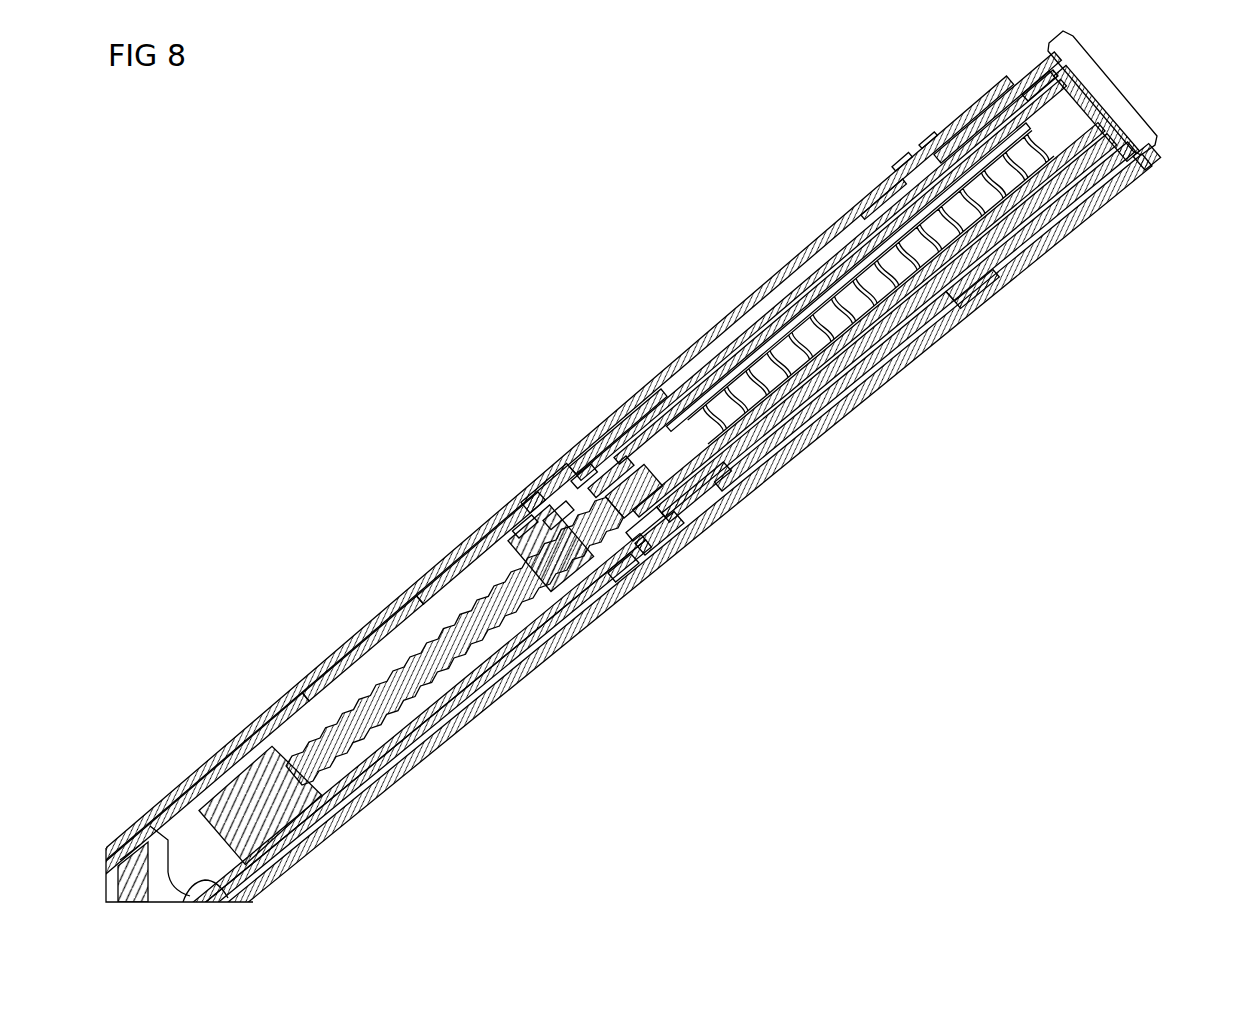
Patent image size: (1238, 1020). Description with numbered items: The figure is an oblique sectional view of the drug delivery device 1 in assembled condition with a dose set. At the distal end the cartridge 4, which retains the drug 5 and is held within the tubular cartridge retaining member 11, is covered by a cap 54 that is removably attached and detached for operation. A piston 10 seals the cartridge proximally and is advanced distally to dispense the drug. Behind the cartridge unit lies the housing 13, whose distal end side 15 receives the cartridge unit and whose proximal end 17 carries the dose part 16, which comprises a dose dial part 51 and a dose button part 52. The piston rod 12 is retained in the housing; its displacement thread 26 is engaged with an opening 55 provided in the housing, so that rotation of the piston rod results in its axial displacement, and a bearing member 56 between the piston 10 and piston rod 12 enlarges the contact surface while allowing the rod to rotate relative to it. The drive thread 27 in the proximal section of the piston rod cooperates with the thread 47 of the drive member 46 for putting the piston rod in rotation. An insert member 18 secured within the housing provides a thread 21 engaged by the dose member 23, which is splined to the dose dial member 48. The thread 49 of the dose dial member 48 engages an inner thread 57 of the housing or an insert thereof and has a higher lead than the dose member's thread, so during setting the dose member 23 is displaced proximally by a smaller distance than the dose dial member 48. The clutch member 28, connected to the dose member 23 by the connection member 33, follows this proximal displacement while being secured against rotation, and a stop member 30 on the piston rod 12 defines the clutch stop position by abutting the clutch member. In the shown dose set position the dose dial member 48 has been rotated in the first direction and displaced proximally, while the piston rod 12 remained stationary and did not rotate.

The drug delivery device 1 is at (690, 200).
The cartridge 4 is at (432, 602).
The drug 5 is at (188, 832).
The piston 10 is at (296, 845).
The cartridge retaining member 11 is at (340, 684).
The piston rod 12 is at (402, 742).
The housing 13 is at (752, 292).
The distal end side of the housing 15 is at (492, 508).
The dose part 16 is at (1150, 124).
The proximal end of the housing 17 is at (902, 165).
The insert member 18 is at (560, 452).
The thread 21 is at (590, 422).
The dose member 23 is at (700, 352).
The displacement thread 26 is at (462, 662).
The drive thread 27 is at (702, 510).
The clutch member 28 is at (652, 545).
The stop member 30 is at (628, 402).
The connection member 33 is at (542, 472).
The drive member 46 is at (958, 302).
The thread 47 is at (862, 328).
The dose dial member 48 is at (1048, 212).
The thread 49 is at (932, 152).
The dose dial part 51 is at (1148, 162).
The dose button part 52 is at (1115, 80).
The cap 54 is at (282, 718).
The opening 55 is at (546, 562).
The bearing member 56 is at (266, 752).
The thread 57 is at (855, 203).